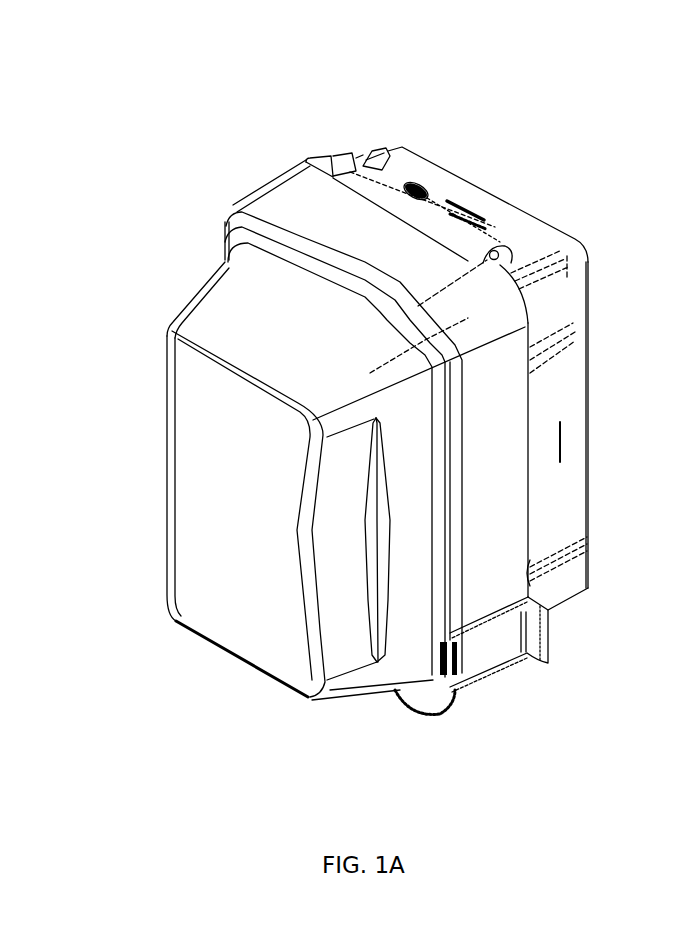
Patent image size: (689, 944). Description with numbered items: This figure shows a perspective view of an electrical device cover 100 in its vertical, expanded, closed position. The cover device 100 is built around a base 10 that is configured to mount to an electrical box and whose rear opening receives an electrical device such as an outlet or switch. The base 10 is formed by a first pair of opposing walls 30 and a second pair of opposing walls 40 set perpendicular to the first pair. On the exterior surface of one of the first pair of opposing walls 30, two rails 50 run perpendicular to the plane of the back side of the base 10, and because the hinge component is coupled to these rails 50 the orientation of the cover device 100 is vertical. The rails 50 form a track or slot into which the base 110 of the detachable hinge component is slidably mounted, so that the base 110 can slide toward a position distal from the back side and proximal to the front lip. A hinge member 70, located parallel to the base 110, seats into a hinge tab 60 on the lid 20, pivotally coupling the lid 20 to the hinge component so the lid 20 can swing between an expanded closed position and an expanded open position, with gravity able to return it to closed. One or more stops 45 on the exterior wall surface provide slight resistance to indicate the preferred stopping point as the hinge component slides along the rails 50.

The electrical device cover 100 is at (290, 117).
The base 10 is at (583, 592).
The lid 20 is at (220, 597).
The first pair of opposing walls 30 is at (525, 235).
The second pair of opposing walls 40 is at (555, 500).
The stop 45 is at (447, 198).
The rail 50 is at (570, 242).
The hinge tab 60 is at (383, 152).
The hinge member 70 is at (500, 262).
The base of the detachable hinge component 110 is at (420, 185).